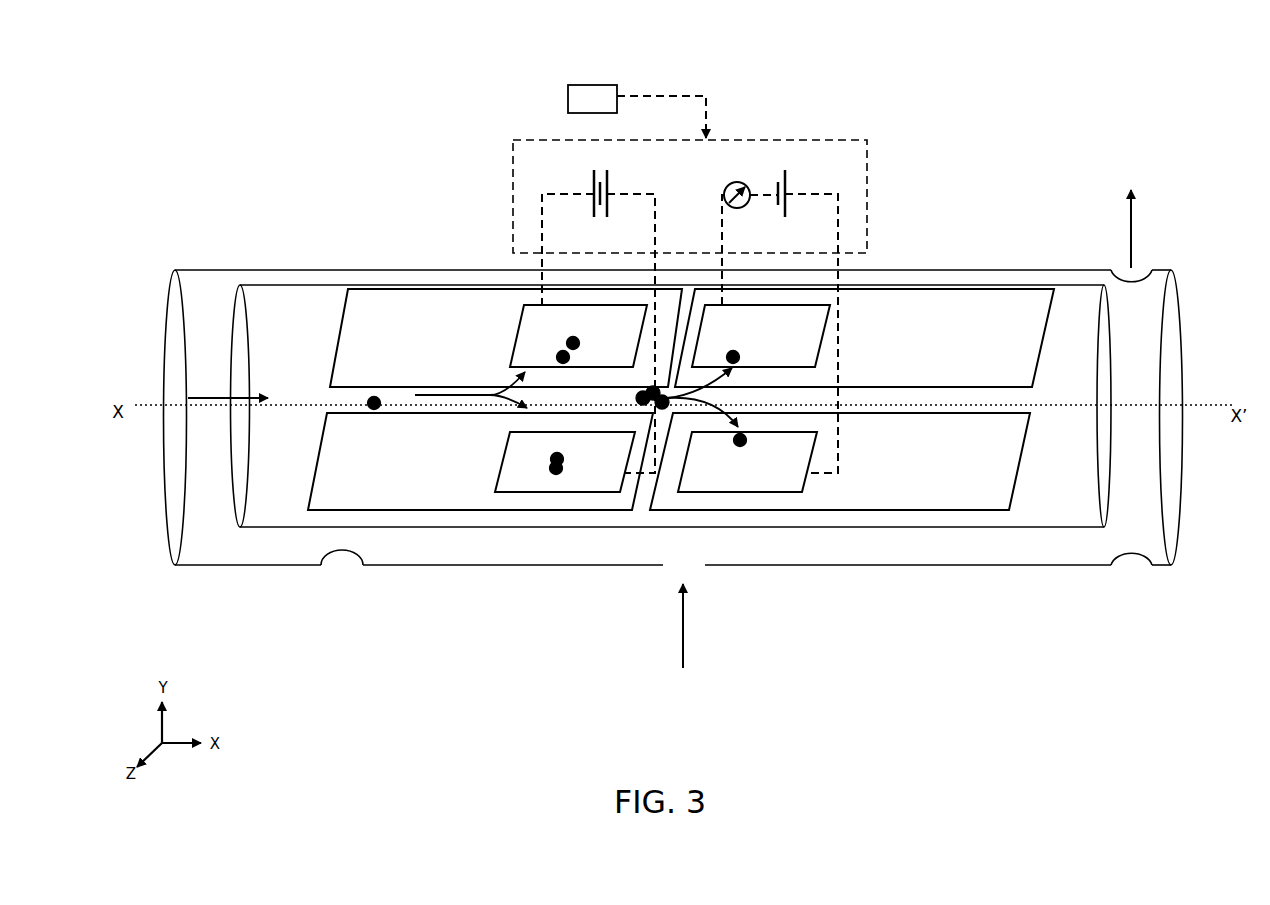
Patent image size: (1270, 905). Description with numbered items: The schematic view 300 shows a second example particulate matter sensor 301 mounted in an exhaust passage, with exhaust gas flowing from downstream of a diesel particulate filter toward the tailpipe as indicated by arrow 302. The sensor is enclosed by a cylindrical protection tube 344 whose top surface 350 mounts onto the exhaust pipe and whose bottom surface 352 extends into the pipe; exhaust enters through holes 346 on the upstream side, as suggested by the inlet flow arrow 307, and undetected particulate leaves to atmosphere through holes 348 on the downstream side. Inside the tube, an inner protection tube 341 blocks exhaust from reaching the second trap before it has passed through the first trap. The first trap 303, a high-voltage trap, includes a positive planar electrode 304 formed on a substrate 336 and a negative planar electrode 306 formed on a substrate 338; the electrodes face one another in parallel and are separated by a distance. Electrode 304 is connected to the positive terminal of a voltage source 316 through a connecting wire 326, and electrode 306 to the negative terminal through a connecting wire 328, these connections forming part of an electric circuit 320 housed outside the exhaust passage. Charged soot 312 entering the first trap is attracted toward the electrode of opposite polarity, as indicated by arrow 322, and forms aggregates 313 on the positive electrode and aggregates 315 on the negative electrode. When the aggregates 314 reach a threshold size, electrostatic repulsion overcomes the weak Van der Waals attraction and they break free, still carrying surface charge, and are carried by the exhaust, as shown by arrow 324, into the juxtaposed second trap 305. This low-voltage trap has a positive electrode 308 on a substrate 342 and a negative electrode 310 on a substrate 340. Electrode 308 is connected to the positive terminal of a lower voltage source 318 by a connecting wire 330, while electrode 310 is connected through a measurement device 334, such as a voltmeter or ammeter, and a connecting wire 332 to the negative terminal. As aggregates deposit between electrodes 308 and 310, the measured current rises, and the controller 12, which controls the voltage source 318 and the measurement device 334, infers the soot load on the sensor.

The controller 12 is at (637, 111).
The schematic view 300 is at (1190, 104).
The particulate matter sensor 301 is at (214, 195).
The arrow 302 is at (683, 612).
The first trap 303 is at (418, 514).
The electrode 304 is at (510, 460).
The second trap 305 is at (892, 509).
The electrode 306 is at (524, 320).
The inlet exhaust flow 307 is at (226, 397).
The electrode 308 is at (812, 462).
The electrode 310 is at (827, 342).
The charged particulate matter 312 is at (378, 410).
The aggregate 313 is at (565, 458).
The aggregates 314 is at (640, 398).
The aggregates 315 is at (578, 341).
The voltage source 316 is at (592, 180).
The voltage source 318 is at (780, 188).
The electric circuit 320 is at (510, 150).
The arrow 322 is at (416, 398).
The particle flow path second stage 324 is at (720, 405).
The connecting wire 326 is at (655, 236).
The connecting wire 328 is at (543, 232).
The connecting wire 330 is at (838, 242).
The connecting wire 332 is at (722, 230).
The measurement device 334 is at (724, 190).
The substrate 336 is at (318, 458).
The substrate 338 is at (340, 328).
The substrate 340 is at (1022, 460).
The inner protection tube 341 is at (985, 282).
The substrate 342 is at (1040, 335).
The cylindrical tube 344 is at (244, 270).
The holes 346 is at (337, 566).
The holes 348 is at (1132, 283).
The top surface 350 is at (166, 345).
The bottom surface 352 is at (1181, 528).